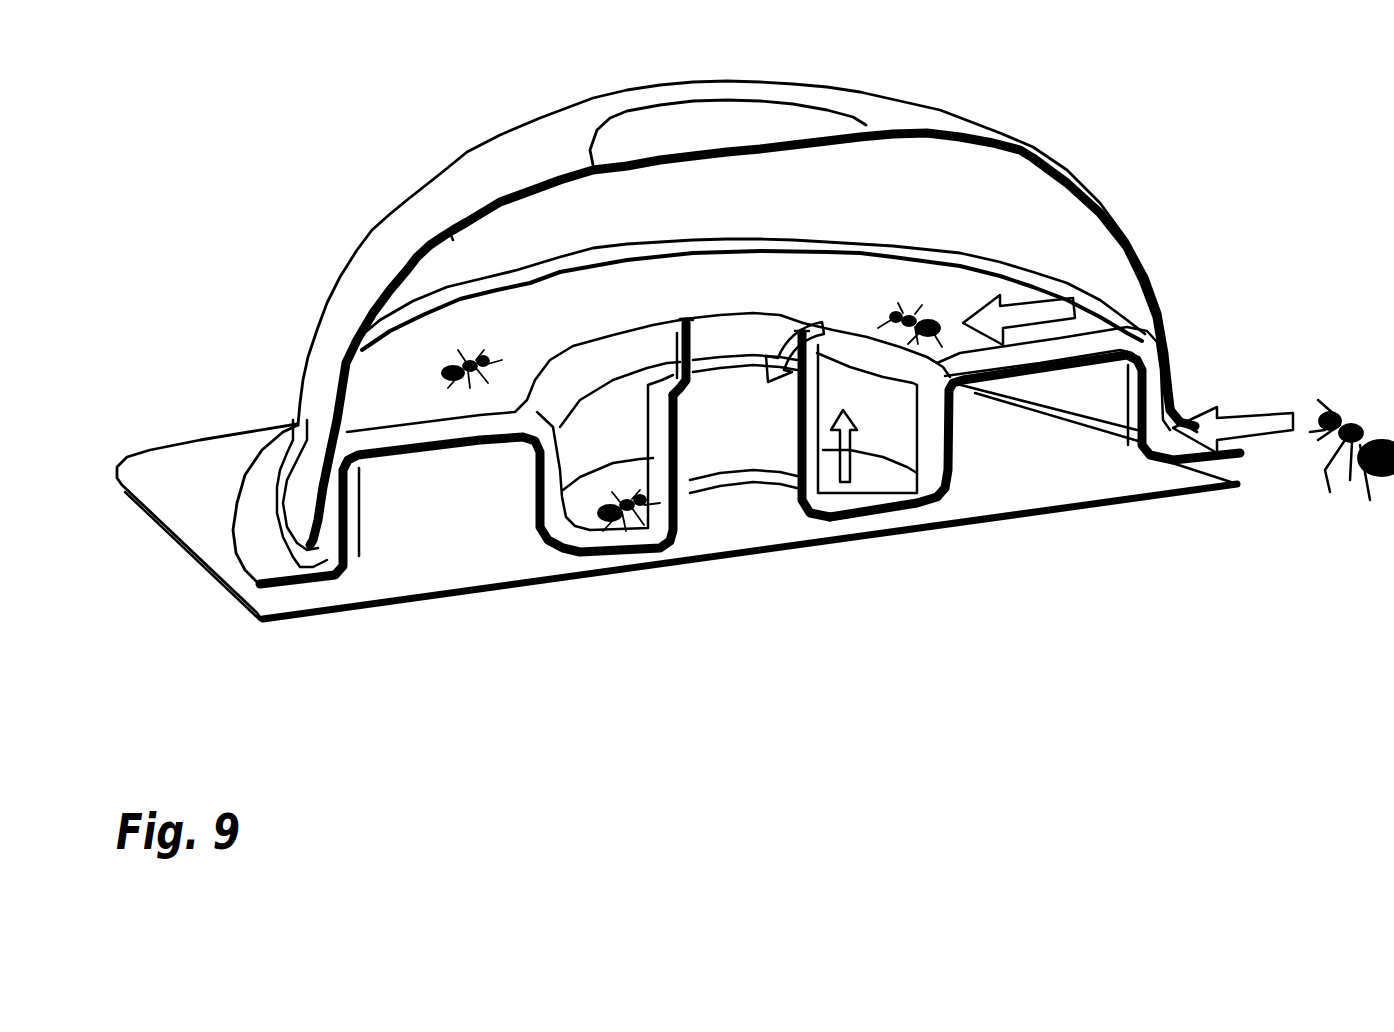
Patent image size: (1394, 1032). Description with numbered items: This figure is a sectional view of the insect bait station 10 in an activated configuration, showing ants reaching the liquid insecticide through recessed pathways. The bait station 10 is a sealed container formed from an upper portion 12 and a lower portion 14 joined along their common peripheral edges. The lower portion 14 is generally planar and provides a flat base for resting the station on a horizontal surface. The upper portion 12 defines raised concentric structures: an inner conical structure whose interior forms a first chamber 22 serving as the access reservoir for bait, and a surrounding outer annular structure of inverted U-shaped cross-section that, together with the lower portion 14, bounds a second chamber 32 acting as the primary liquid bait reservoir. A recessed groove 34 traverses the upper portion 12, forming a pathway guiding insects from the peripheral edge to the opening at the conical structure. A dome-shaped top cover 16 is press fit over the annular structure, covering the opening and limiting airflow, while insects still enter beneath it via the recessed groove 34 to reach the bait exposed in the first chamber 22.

The insect bait station 10 is at (1199, 81).
The upper portion 12 is at (258, 548).
The lower portion 14 is at (425, 590).
The top cover 16 is at (905, 117).
The first chamber 22 is at (756, 450).
The second chamber 32 is at (462, 537).
The recessed groove 34 is at (435, 436).